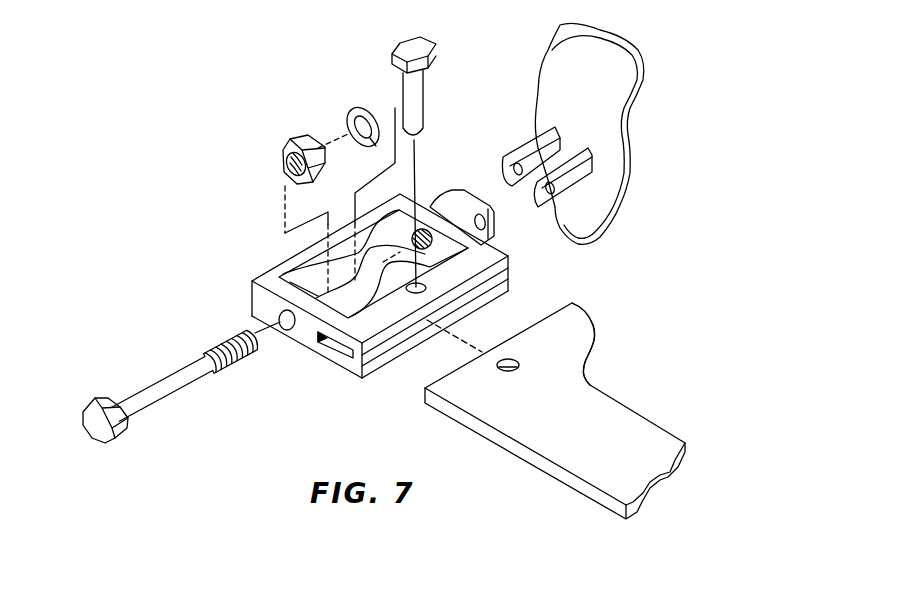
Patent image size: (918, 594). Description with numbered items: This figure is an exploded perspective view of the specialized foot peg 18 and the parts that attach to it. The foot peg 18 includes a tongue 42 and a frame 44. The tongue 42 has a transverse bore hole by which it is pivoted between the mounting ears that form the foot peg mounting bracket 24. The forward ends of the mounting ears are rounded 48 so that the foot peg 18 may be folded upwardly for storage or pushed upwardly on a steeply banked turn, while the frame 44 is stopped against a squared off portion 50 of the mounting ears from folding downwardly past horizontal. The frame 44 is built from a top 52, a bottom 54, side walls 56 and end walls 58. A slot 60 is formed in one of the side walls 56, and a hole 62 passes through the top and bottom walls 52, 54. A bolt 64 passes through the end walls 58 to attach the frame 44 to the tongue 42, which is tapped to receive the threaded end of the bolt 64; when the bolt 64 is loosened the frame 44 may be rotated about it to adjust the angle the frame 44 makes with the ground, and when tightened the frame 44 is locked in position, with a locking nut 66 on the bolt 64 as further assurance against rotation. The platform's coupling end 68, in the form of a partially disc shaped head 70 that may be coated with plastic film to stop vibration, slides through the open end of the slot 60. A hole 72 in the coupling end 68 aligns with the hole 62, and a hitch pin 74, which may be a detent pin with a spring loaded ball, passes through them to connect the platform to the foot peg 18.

The specialized foot peg 18 is at (248, 276).
The foot peg mounting bracket 24 is at (520, 140).
The tongue 42 is at (436, 196).
The frame 44 is at (297, 337).
The rounded forward ends 48 is at (503, 158).
The squared off portion 50 is at (535, 200).
The top wall 52 is at (250, 300).
The bottom wall 54 is at (318, 348).
The side wall 56 is at (371, 378).
The end walls 58 is at (290, 330).
The slot 60 is at (356, 367).
The hole 62 is at (430, 288).
The bolt 64 is at (157, 400).
The locking nut 66 is at (305, 134).
The coupling end 68 is at (555, 407).
The partially disc shaped head 70 is at (595, 330).
The hole 72 is at (518, 362).
The hitch pin 74 is at (427, 108).